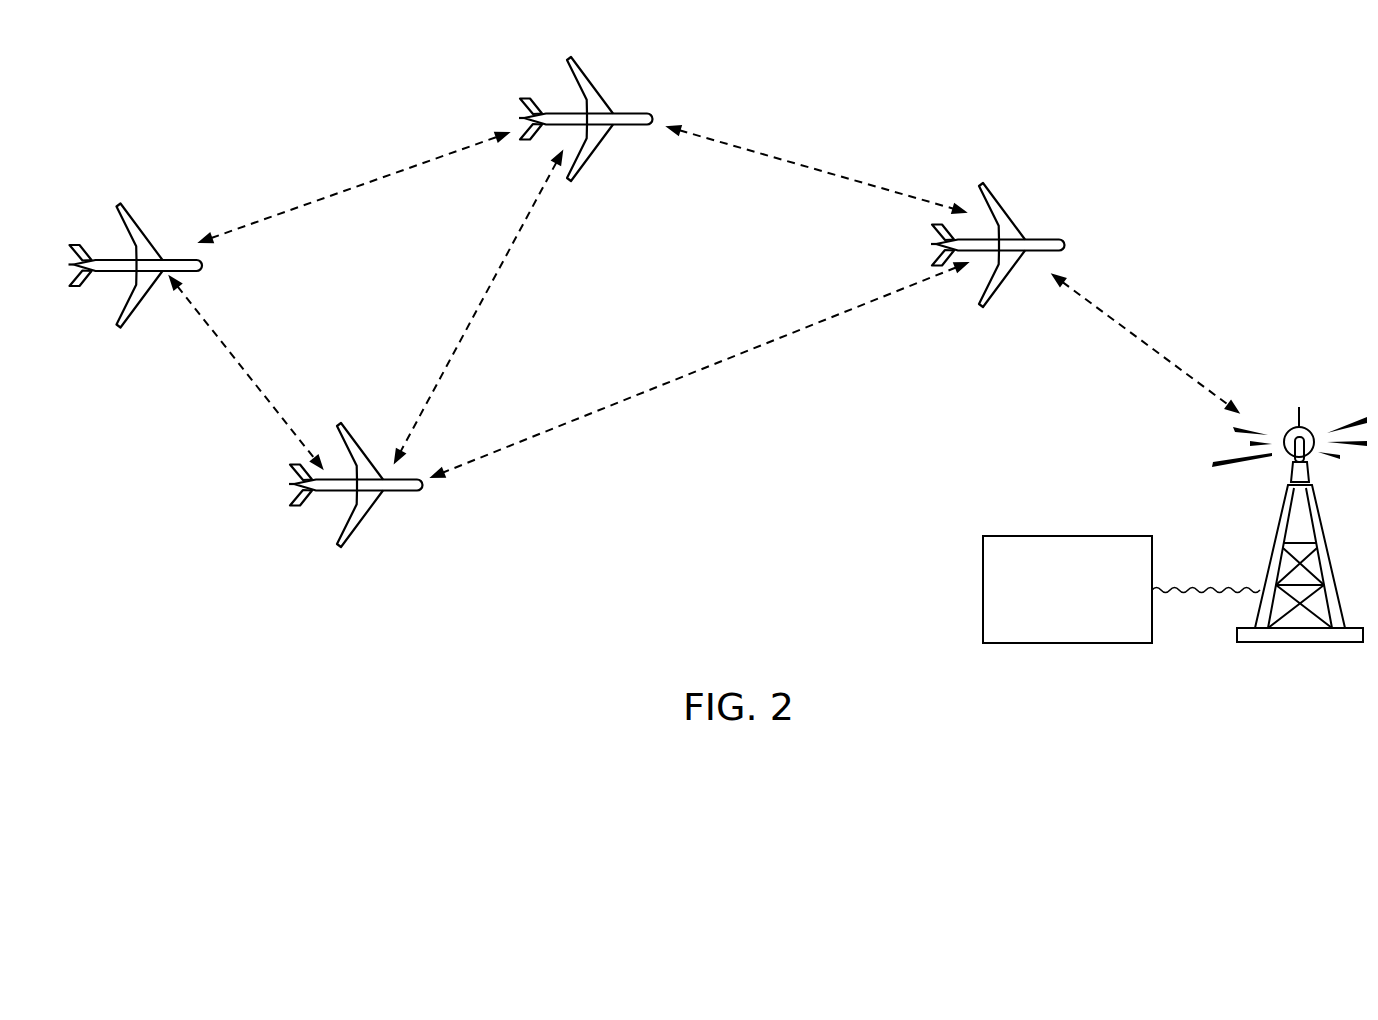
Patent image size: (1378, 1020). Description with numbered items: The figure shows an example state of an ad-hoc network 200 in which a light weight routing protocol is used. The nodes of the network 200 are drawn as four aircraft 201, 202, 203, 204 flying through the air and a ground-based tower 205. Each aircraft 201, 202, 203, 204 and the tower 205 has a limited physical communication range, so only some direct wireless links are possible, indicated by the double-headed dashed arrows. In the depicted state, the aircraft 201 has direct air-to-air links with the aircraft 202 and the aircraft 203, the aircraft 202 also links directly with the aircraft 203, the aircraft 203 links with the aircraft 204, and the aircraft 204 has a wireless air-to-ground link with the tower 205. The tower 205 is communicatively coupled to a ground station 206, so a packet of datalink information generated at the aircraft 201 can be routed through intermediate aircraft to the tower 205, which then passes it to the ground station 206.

The ad-hoc network 200 is at (1259, 143).
The aircraft 201 is at (139, 224).
The aircraft 202 is at (356, 444).
The aircraft 203 is at (590, 80).
The aircraft 204 is at (1000, 205).
The tower 205 is at (1272, 554).
The ground station 206 is at (983, 590).